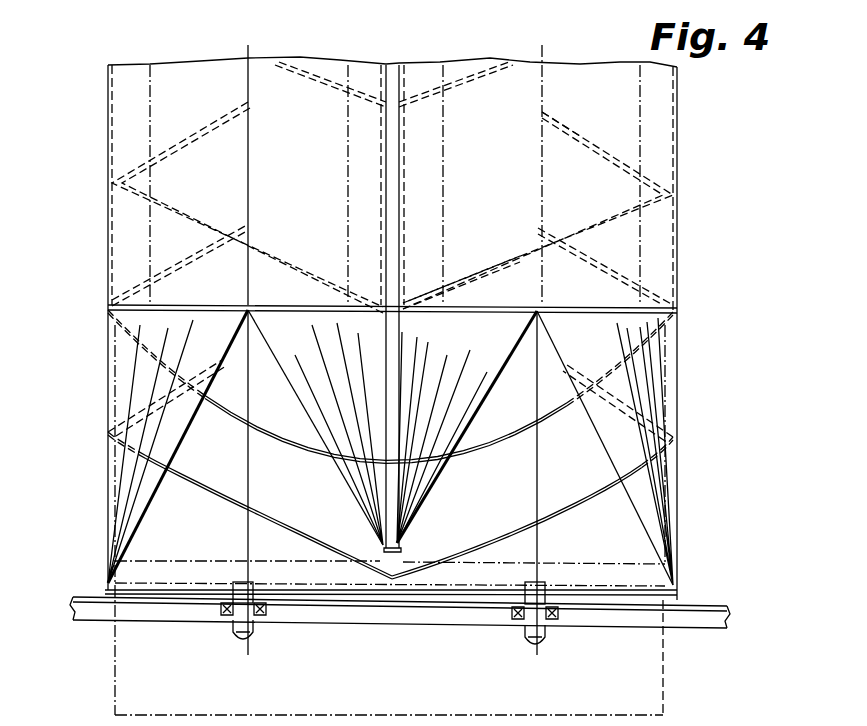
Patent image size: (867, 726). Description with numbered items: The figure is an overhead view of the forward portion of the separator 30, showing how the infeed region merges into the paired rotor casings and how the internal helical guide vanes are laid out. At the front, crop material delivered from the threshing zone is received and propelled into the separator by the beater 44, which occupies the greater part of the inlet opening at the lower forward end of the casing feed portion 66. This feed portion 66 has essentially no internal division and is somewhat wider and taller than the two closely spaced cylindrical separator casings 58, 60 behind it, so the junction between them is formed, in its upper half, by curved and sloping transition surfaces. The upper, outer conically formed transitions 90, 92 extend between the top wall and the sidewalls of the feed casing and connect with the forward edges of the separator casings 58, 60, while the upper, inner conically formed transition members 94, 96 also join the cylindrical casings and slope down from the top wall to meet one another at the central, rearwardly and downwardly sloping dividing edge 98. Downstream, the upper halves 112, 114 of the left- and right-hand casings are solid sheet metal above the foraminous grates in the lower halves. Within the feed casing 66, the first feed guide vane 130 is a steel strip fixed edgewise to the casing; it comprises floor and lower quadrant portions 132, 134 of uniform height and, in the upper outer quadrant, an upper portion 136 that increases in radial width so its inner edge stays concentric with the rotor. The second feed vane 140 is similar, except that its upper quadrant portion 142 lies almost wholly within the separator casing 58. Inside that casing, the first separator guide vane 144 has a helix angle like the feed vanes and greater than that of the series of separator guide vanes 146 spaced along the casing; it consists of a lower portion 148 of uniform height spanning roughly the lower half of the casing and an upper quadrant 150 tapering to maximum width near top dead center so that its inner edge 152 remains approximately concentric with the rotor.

The separator 30 is at (101, 119).
The left-hand cylindrical separator casing 58 is at (706, 212).
The right-hand cylindrical separator casing 60 is at (95, 206).
The casing feed portion 66 is at (95, 470).
The beater 44 is at (663, 648).
The central dividing edge 98 is at (392, 333).
The left-hand upper casing half 112 is at (497, 162).
The right-hand upper casing half 114 is at (320, 162).
The left-hand upper outer conical transition 90 is at (599, 342).
The right-hand upper outer conical transition 92 is at (222, 342).
The left-hand upper inner conical transition member 94 is at (492, 350).
The right-hand upper inner conical transition member 96 is at (305, 342).
The first feed guide vane 130 is at (390, 505).
The floor portion of first feed guide vane 132 is at (472, 560).
The lower quadrant portion of first feed guide vane 134 is at (615, 492).
The upper portion of first feed guide vane 136 is at (608, 432).
The second feed vane 140 is at (467, 427).
The upper quadrant portion of second feed vane 142 is at (610, 283).
The first separator guide vane 144 is at (480, 259).
The separator guide vanes 146 is at (463, 74).
The lower portion of first separator guide vane 148 is at (519, 254).
The upper quadrant of first separator guide vane 150 is at (566, 125).
The inner edge of first separator guide vane 152 is at (625, 170).